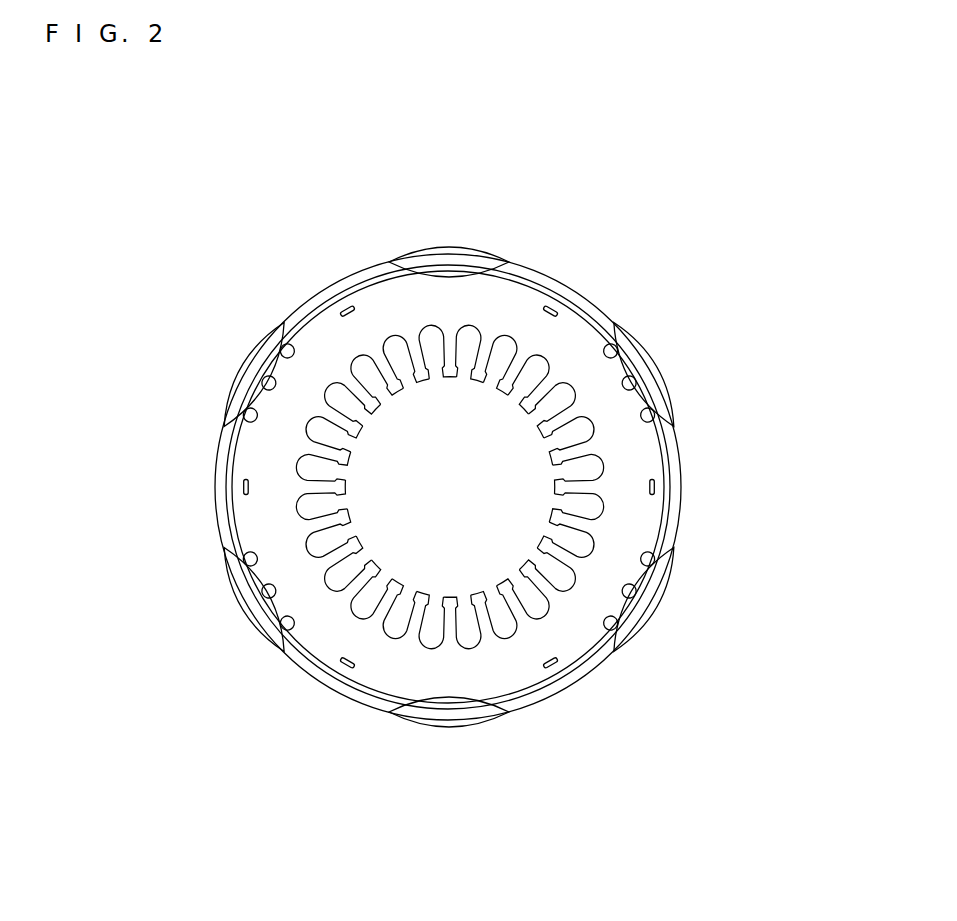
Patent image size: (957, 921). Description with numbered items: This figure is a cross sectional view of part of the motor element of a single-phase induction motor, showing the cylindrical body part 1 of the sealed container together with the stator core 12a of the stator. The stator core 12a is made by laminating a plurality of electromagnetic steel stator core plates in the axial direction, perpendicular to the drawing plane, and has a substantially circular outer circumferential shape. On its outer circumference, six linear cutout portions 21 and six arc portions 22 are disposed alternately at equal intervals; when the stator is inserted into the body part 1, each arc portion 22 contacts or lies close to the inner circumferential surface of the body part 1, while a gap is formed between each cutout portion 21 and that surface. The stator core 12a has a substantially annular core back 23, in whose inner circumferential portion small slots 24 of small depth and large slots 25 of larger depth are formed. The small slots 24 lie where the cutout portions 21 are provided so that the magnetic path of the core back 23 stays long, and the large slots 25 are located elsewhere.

The body part 1 is at (366, 274).
The stator core 12a is at (563, 636).
The cutout portion 21 is at (338, 302).
The arc portion 22 is at (467, 248).
The core back 23 is at (253, 523).
The small slot 24 is at (590, 505).
The large slot 25 is at (473, 338).